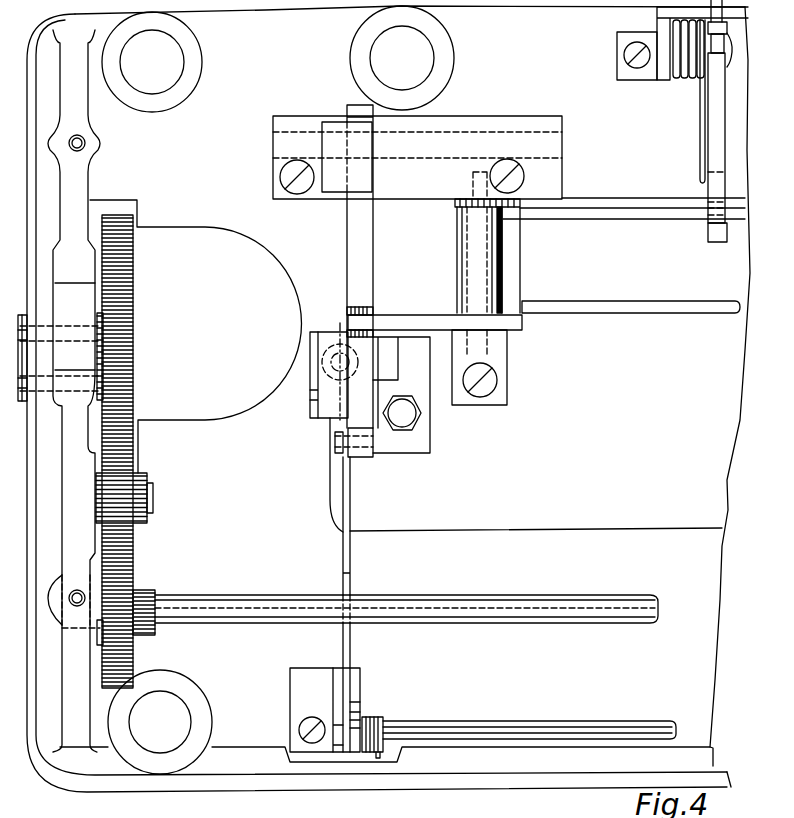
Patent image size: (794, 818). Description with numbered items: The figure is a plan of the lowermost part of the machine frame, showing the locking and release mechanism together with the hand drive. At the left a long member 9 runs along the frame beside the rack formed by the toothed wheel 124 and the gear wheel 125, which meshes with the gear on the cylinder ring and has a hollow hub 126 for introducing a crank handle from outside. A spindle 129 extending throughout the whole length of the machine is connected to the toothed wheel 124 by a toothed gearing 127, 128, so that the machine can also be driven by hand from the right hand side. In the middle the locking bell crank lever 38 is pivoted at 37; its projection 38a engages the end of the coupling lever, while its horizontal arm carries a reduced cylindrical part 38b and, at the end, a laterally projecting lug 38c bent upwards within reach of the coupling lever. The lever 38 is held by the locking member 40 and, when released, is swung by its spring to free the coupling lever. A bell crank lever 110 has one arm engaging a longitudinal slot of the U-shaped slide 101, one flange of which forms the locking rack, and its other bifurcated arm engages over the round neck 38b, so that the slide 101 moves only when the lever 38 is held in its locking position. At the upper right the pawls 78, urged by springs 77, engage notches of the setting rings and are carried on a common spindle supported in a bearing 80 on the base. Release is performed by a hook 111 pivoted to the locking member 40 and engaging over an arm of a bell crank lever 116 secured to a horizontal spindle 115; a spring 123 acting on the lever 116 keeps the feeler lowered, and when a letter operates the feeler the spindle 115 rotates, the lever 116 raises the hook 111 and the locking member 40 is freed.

The slide bar 9 is at (60, 460).
The pivot 37 is at (280, 134).
The locking bell crank lever 38 is at (357, 112).
The projection 38a is at (337, 182).
The reduced cylindrical part 38b is at (348, 311).
The laterally projecting lug 38c is at (315, 401).
The locking member 40 is at (363, 453).
The spring 77 is at (702, 152).
The pawl 78 is at (714, 118).
The bearing 80 is at (663, 18).
The U-shaped slide 101 is at (638, 308).
The bell crank lever 110 is at (427, 323).
The hook 111 is at (348, 535).
The horizontal spindle 115 is at (623, 730).
The bell crank lever 116 is at (355, 682).
The spring 123 is at (375, 718).
The toothed wheel 124 is at (132, 238).
The gear wheel 125 is at (196, 336).
The hollow hub 126 is at (80, 333).
The toothed gearing 127 is at (134, 548).
The toothed gearing 128 is at (132, 642).
The spindle 129 is at (575, 612).